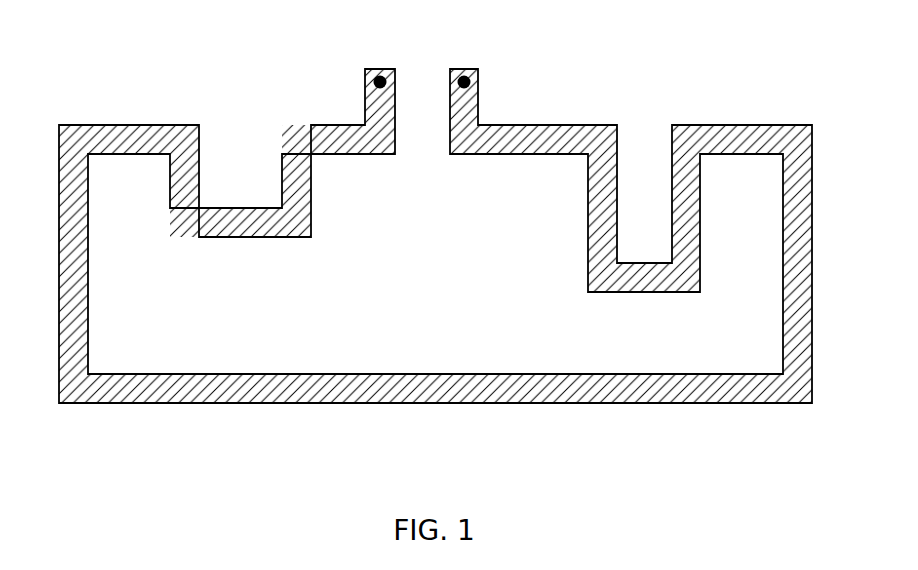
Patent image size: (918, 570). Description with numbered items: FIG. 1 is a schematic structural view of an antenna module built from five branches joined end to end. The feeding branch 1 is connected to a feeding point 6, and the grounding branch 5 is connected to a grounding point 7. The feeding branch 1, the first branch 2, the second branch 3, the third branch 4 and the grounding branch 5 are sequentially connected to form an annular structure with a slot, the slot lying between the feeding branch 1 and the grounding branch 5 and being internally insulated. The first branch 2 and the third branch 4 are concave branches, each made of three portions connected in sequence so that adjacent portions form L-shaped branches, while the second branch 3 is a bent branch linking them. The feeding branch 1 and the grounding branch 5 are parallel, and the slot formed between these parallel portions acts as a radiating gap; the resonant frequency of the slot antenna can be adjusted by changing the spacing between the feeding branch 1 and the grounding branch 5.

The feeding branch 1 is at (338, 137).
The first branch 2 is at (241, 225).
The second branch 3 is at (450, 390).
The third branch 4 is at (640, 278).
The grounding branch 5 is at (519, 137).
The feeding point 6 is at (380, 78).
The grounding point 7 is at (464, 78).